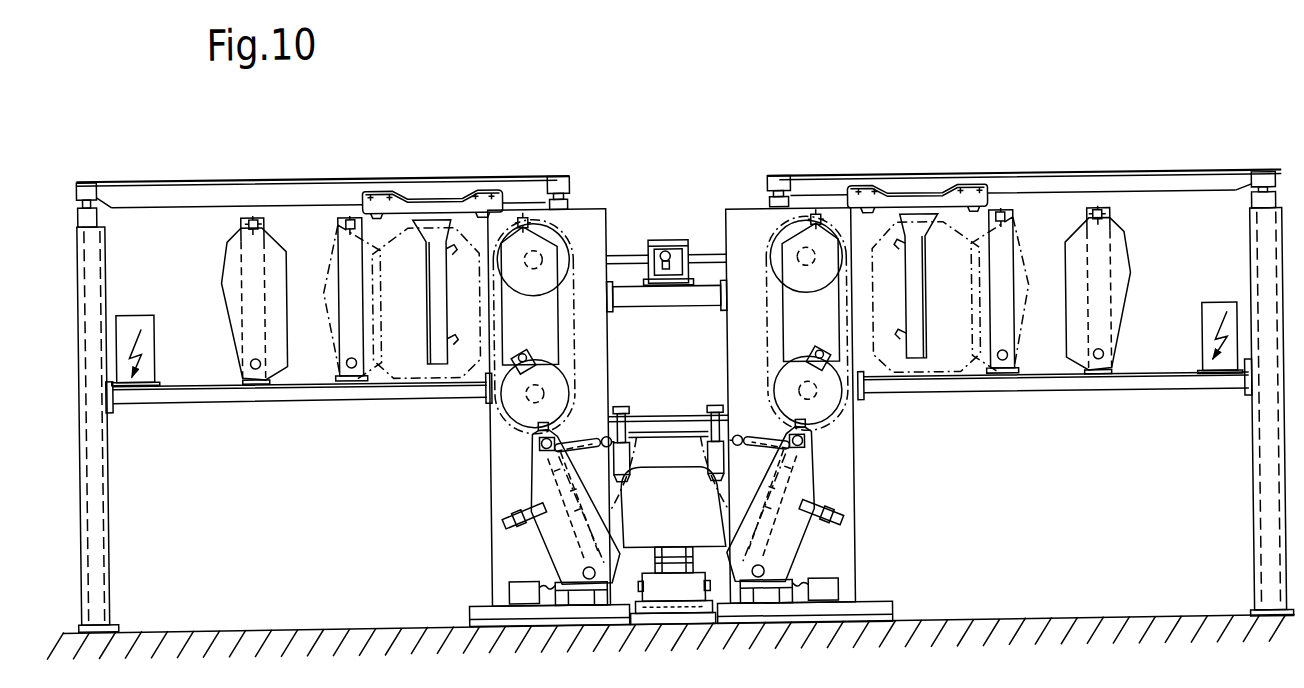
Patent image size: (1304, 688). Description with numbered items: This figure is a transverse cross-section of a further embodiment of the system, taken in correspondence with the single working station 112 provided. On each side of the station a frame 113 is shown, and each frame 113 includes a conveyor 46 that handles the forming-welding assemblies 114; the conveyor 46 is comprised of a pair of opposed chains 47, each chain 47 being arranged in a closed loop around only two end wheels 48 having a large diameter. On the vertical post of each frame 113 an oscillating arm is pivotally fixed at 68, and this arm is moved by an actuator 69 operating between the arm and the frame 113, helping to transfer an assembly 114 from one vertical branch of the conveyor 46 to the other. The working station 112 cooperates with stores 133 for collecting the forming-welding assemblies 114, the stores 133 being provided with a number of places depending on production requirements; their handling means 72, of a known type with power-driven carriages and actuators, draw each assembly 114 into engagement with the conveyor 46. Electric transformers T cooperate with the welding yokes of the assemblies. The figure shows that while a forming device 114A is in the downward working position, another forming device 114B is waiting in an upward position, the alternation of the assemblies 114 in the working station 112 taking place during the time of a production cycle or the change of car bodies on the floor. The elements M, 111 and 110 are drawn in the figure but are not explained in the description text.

The stores 133 is at (392, 173).
The handling means 72 is at (447, 188).
The frame 113 is at (594, 206).
The working station 112 is at (670, 172).
The motor M is at (671, 234).
The forming-welding assembly 114 is at (562, 278).
The conveyor 46 is at (577, 290).
The chain 47 is at (573, 333).
The end wheel 48 is at (887, 460).
The waiting forming device 114B is at (521, 334).
The forming device in working position 114A is at (582, 534).
The actuator 69 is at (502, 522).
The pivot 68 is at (581, 574).
The workpiece support 111 is at (639, 533).
The base pedestal 110 is at (685, 591).
The electric transformer T is at (157, 303).